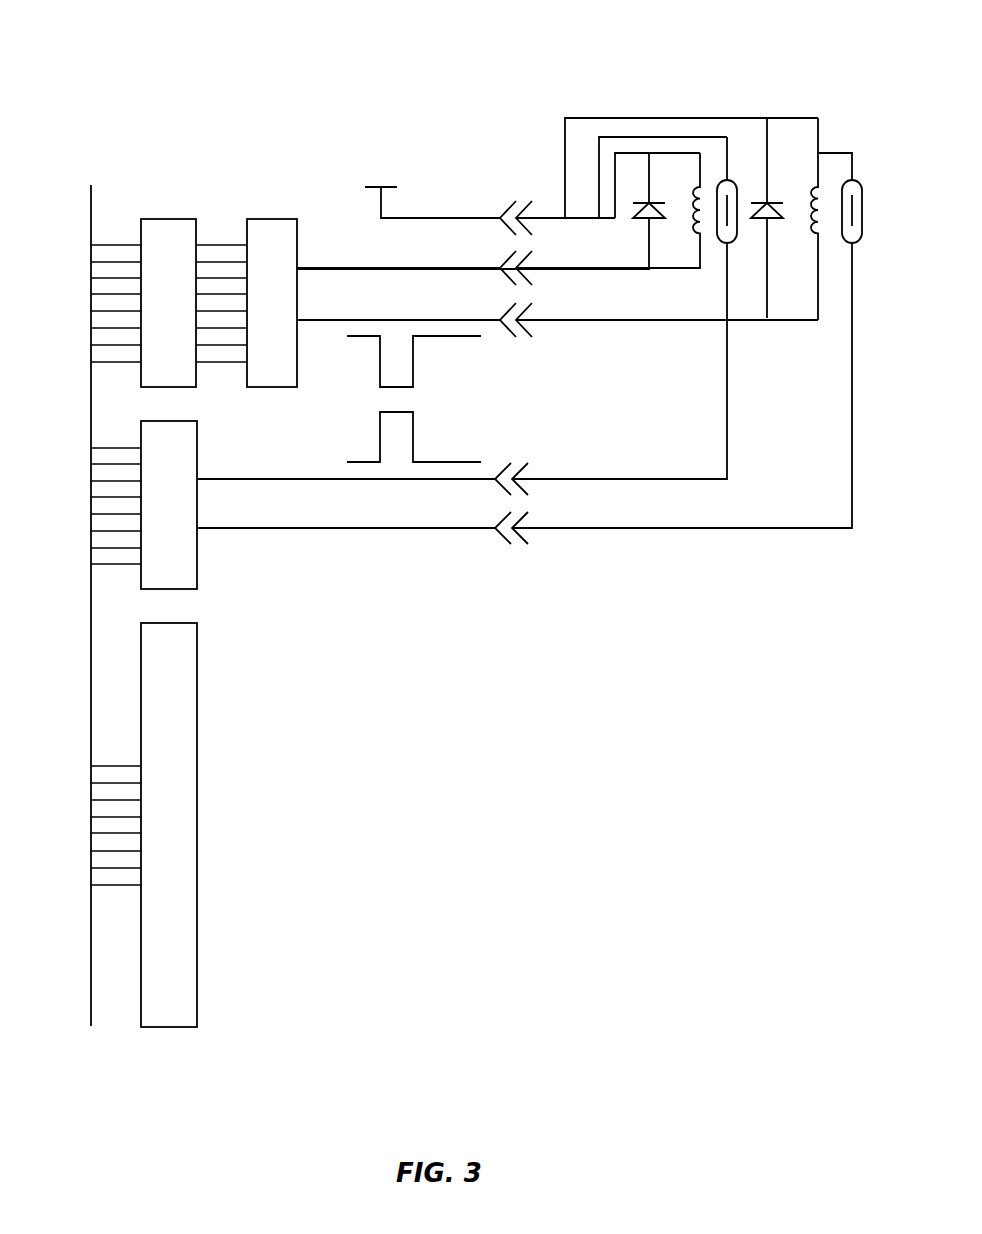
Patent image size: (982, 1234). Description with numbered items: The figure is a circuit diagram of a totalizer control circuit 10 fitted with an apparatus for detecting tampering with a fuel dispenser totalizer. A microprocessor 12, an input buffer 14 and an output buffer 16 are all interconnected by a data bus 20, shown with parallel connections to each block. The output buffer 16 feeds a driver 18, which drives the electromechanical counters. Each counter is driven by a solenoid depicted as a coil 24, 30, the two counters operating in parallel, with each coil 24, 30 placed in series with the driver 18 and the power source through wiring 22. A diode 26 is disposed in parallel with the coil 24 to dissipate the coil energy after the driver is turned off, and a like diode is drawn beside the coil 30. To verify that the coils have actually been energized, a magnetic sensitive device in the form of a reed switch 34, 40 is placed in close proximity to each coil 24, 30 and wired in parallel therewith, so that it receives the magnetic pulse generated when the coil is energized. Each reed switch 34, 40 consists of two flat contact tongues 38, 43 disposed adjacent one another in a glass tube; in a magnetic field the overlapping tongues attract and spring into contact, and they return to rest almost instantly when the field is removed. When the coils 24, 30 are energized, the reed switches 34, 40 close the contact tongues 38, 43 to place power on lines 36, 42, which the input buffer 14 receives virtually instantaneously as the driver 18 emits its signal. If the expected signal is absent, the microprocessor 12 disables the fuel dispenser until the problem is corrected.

The control circuit 10 is at (169, 58).
The microprocessor 12 is at (197, 697).
The input buffer 14 is at (197, 457).
The output buffer 16 is at (145, 219).
The driver 18 is at (263, 219).
The data bus 20 is at (91, 387).
The wiring 22 is at (457, 218).
The coil 24 is at (687, 190).
The diode 26 is at (632, 203).
The coil 30 is at (807, 190).
The reed switch 34 is at (720, 183).
The line 36 is at (613, 479).
The contact tongue 38 is at (720, 222).
The reed switch 40 is at (845, 243).
The line 42 is at (645, 528).
The contact tongue 43 is at (857, 203).